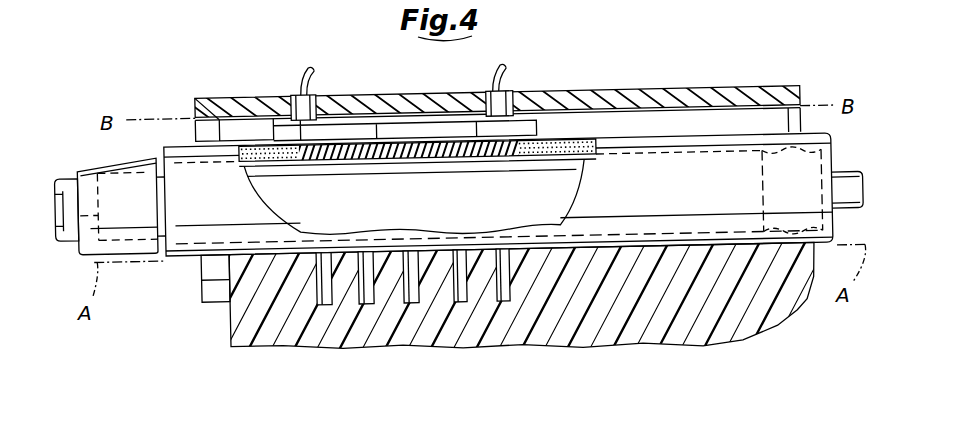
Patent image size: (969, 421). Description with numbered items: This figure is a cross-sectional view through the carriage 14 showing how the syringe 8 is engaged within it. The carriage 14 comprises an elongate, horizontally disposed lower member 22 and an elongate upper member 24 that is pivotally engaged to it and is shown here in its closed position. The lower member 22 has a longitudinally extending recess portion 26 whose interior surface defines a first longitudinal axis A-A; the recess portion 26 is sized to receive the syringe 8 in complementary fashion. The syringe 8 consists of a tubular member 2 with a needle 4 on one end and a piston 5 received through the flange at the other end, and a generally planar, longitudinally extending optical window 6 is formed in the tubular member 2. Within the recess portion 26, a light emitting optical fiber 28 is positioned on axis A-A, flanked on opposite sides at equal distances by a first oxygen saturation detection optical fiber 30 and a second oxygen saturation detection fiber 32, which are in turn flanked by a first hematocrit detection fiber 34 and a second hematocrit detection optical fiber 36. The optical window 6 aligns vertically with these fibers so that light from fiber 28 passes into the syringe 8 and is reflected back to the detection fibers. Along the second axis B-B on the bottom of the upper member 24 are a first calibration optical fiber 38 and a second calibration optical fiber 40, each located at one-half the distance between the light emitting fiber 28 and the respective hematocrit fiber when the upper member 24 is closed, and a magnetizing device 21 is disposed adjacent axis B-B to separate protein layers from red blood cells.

The tubular member 2 is at (697, 143).
The needle 4 is at (69, 180).
The piston 5 is at (790, 150).
The optical window 6 is at (344, 143).
The syringe 8 is at (185, 266).
The carriage 14 is at (507, 72).
The magnetizing device 21 is at (410, 100).
The lower member 22 is at (232, 334).
The upper member 24 is at (614, 91).
The recess portion 26 is at (673, 245).
The light emitting optical fiber 28 is at (411, 304).
The first oxygen saturation detection optical fiber 30 is at (458, 304).
The second oxygen saturation detection fiber 32 is at (356, 306).
The first hematocrit detection fiber 34 is at (508, 291).
The second hematocrit detection optical fiber 36 is at (318, 298).
The first calibration optical fiber 38 is at (293, 96).
The second calibration optical fiber 40 is at (516, 92).